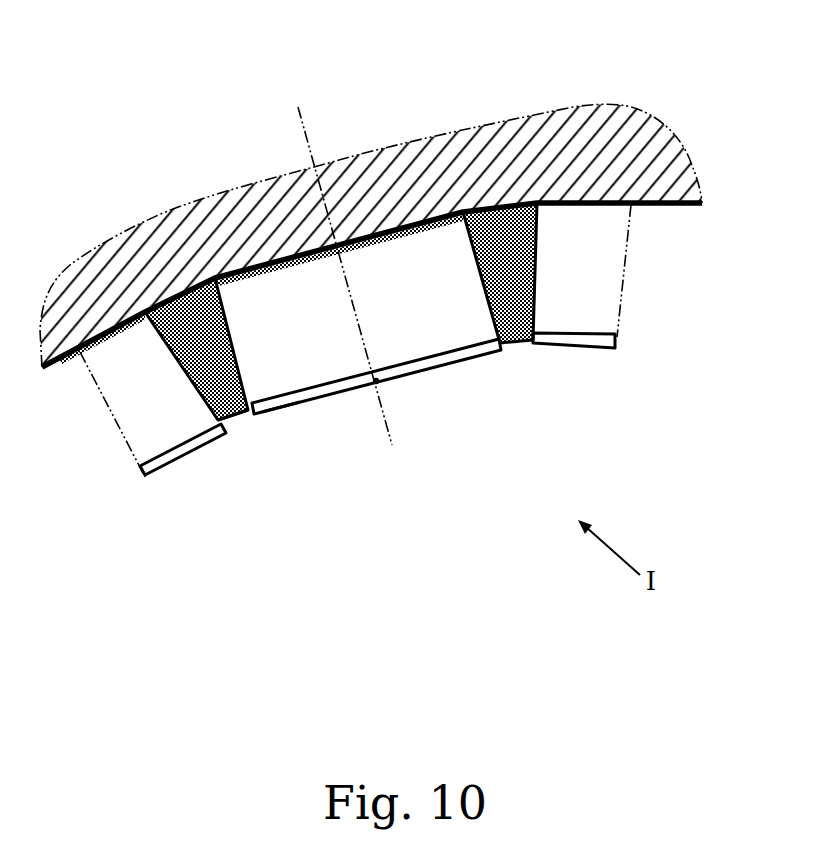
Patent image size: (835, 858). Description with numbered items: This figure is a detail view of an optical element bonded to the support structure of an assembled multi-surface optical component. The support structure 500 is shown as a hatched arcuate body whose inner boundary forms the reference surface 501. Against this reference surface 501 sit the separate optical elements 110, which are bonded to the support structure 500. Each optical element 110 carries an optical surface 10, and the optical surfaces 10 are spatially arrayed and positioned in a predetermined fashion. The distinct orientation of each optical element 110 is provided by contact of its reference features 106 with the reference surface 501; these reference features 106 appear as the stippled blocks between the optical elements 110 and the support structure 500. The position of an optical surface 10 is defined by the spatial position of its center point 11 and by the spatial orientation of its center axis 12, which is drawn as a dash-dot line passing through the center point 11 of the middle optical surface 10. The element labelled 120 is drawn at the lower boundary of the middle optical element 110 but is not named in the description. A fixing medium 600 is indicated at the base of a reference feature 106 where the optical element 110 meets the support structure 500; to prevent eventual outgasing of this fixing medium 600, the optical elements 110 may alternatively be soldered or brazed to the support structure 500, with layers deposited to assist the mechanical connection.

The optical surface 10 is at (183, 462).
The center point 11 is at (376, 382).
The center axis 12 is at (310, 137).
The reference feature 106 is at (145, 312).
The optical element 110 is at (143, 427).
The bottom surface of stator piece 120 is at (283, 406).
The support structure 500 is at (687, 160).
The reference surface 501 is at (663, 206).
The fixing medium 600 is at (240, 421).